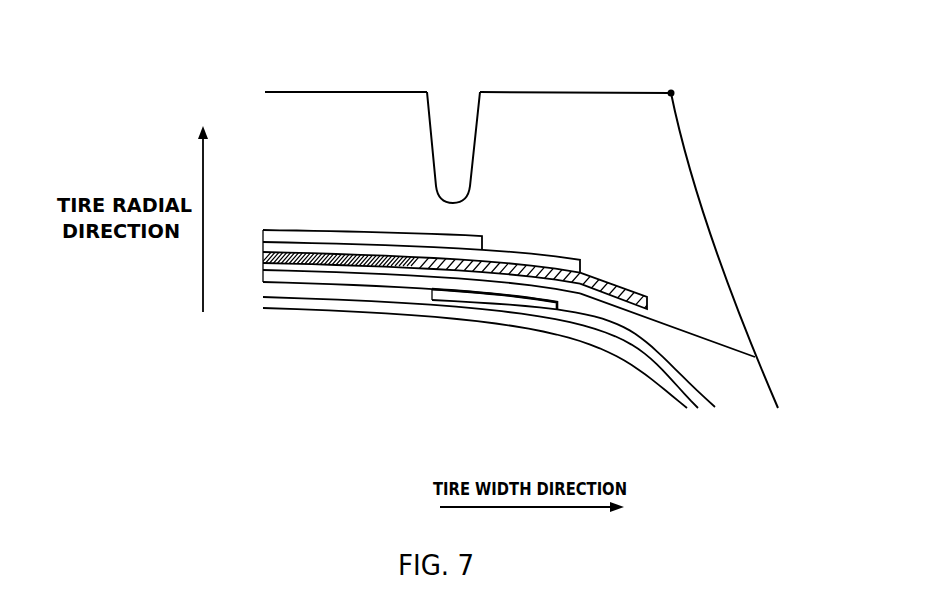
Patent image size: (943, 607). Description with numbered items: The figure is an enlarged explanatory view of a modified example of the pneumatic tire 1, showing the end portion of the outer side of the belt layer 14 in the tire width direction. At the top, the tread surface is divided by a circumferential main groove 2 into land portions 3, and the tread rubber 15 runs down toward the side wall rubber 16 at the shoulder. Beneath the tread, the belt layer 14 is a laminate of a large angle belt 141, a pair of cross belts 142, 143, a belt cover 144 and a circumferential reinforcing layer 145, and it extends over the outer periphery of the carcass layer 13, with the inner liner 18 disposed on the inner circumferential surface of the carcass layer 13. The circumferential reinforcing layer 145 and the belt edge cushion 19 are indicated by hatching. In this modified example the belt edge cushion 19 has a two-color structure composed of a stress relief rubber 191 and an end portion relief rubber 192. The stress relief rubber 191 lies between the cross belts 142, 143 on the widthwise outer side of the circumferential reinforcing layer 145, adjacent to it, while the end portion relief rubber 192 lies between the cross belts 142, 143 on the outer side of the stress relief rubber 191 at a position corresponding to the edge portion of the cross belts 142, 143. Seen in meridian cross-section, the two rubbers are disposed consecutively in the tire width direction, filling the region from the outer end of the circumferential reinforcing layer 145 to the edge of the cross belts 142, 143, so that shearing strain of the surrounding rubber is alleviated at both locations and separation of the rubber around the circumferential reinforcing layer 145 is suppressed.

The pneumatic tire 1 is at (690, 60).
The circumferential main groove 2 is at (452, 104).
The land portion 3 is at (344, 90).
The carcass layer 13 is at (657, 364).
The belt layer 14 is at (450, 385).
The large angle belt 141 is at (432, 284).
The cross belt 142 is at (383, 270).
The cross belt 143 is at (333, 247).
The belt cover 144 is at (295, 237).
The circumferential reinforcing layer 145 is at (265, 288).
The tread rubber 15 is at (688, 210).
The side wall rubber 16 is at (748, 365).
The inner liner 18 is at (621, 357).
The belt edge cushion 19 is at (573, 385).
The stress relief rubber 191 is at (478, 270).
The end portion relief rubber 192 is at (577, 272).